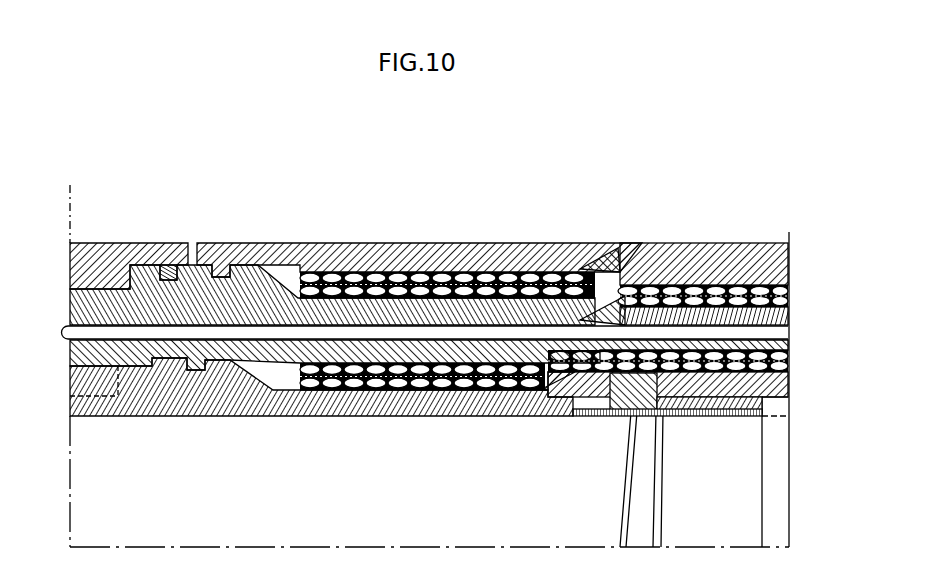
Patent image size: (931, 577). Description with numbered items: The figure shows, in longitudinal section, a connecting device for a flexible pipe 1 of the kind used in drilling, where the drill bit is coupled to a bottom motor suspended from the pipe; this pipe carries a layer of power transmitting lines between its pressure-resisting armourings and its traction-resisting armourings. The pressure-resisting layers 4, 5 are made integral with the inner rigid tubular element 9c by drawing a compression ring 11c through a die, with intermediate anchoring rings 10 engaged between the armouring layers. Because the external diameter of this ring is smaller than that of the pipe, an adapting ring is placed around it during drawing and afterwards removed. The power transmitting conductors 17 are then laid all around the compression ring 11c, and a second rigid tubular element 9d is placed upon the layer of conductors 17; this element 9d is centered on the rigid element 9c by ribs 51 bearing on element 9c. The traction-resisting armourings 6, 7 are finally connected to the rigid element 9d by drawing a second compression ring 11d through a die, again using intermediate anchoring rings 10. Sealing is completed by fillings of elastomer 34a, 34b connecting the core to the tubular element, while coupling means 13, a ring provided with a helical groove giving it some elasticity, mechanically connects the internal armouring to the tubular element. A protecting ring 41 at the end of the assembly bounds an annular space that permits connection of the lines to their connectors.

The flexible pipe 1 is at (773, 240).
The protecting ring 41 is at (112, 257).
The power transmitting conductors 17 is at (289, 333).
The compression ring 11d is at (524, 256).
The compression ring 11c is at (278, 393).
The second rigid tubular element 9d is at (588, 325).
The tubular element 9c is at (322, 405).
The intermediate anchoring rings 10 is at (323, 280).
The traction-resisting armouring 7 is at (413, 275).
The traction-resisting armouring 6 is at (476, 290).
The ribs 51 is at (88, 353).
The pressure-resisting layer 4 is at (418, 380).
The pressure-resisting layer 5 is at (447, 383).
The coupling means 13 is at (597, 410).
The filling of elastomer 34a is at (650, 412).
The filling of elastomer 34b is at (718, 413).